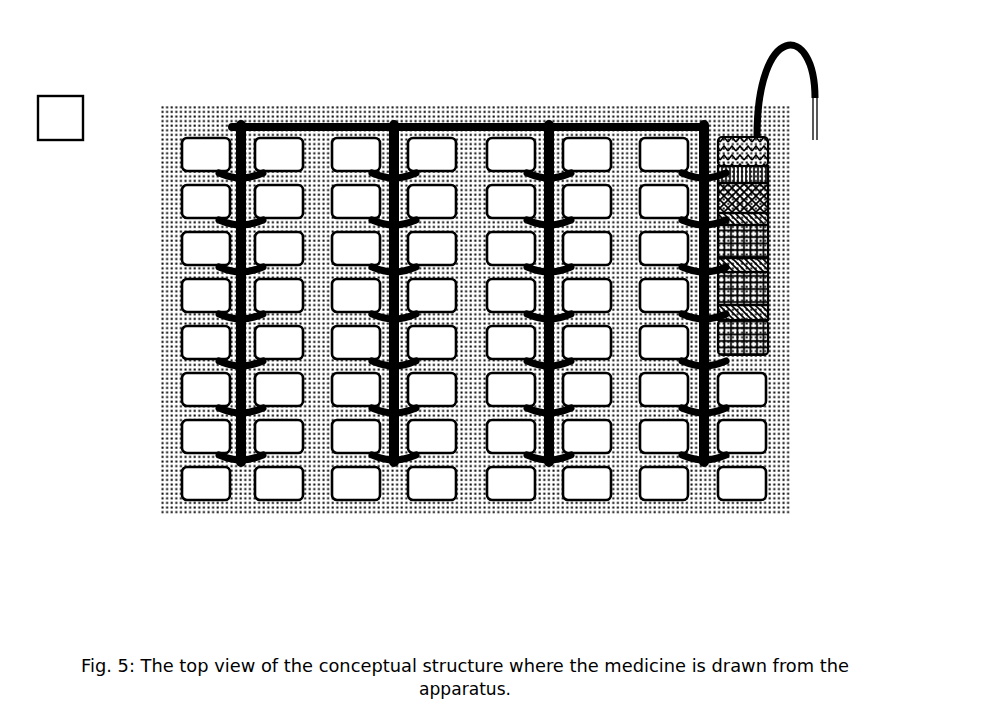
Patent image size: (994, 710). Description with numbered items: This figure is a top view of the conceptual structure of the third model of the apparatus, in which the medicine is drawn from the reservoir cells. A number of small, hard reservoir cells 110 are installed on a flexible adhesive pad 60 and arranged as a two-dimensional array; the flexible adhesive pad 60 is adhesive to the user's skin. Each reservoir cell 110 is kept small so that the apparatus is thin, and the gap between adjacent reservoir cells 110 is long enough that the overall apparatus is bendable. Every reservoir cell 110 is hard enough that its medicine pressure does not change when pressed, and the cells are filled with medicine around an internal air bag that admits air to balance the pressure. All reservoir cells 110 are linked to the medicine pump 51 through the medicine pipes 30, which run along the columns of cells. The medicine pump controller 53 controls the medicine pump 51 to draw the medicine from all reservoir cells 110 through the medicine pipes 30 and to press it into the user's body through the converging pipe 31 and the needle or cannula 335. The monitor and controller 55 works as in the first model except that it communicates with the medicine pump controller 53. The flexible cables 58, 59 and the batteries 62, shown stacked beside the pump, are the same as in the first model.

The medicine pipe 30 is at (383, 121).
The converging pipe 31 is at (752, 76).
The medicine pump 51 is at (770, 153).
The medicine pump controller 53 is at (770, 204).
The monitor and controller 55 is at (65, 84).
The flexible cable 58 is at (770, 315).
The flexible cable 59 is at (770, 175).
The flexible adhesive pad 60 is at (215, 126).
The battery 62 is at (770, 342).
The reservoir cell 110 is at (657, 148).
The needle or cannula 335 is at (823, 122).